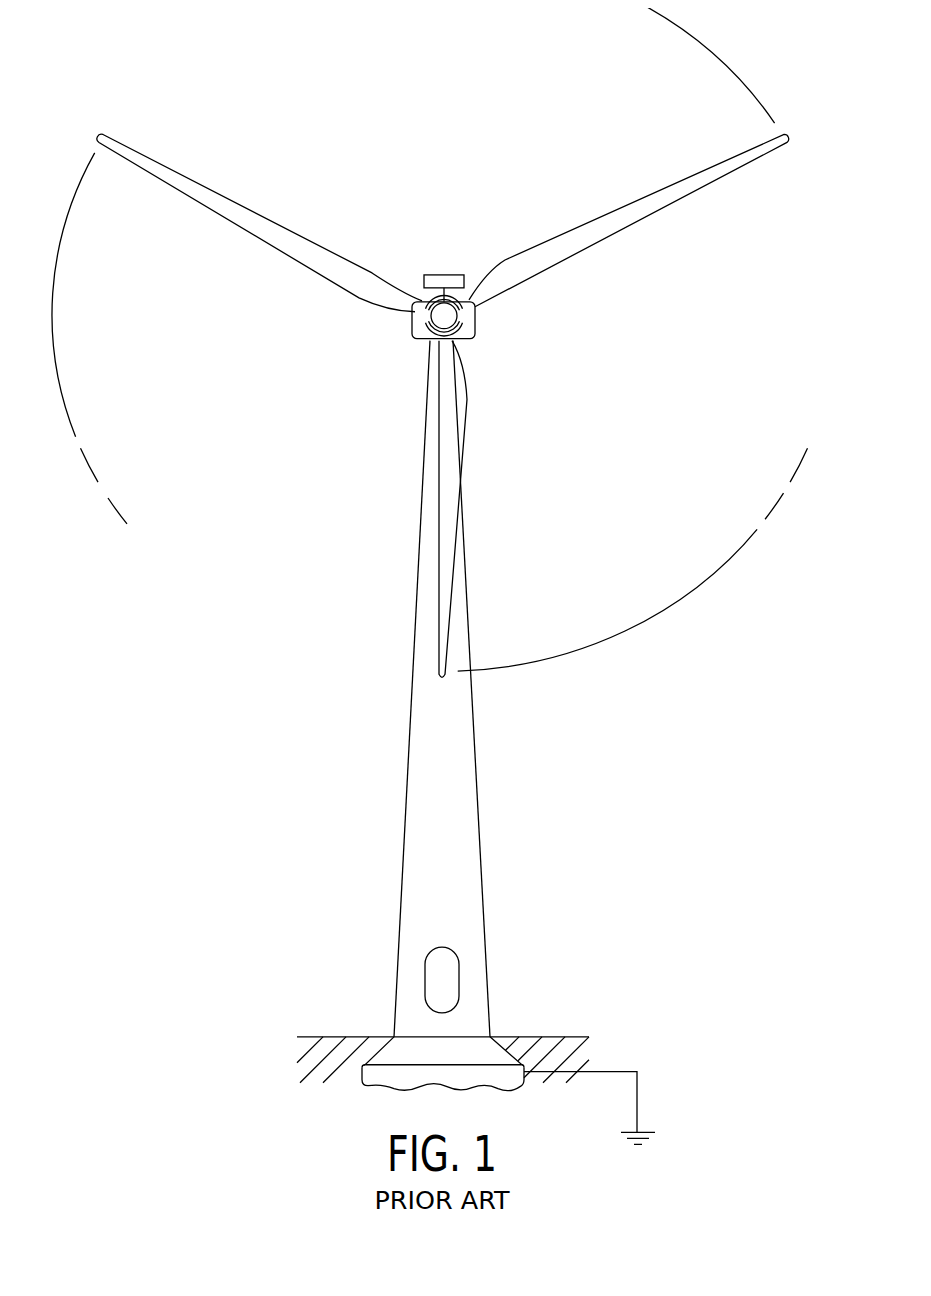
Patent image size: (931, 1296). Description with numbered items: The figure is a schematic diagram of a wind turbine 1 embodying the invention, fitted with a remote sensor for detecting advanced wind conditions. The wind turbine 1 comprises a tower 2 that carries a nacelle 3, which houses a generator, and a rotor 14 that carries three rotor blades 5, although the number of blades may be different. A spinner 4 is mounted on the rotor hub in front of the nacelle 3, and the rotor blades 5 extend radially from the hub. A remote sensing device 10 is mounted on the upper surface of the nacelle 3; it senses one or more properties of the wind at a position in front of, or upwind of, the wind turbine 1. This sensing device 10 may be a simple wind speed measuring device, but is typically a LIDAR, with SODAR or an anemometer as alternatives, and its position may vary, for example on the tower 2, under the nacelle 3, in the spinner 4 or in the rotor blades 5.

The wind turbine 1 is at (443, 639).
The tower 2 is at (403, 821).
The nacelle 3 is at (474, 316).
The spinner 4 is at (433, 316).
The rotor blade 5 is at (320, 246).
The remote sensing device 10 is at (440, 272).
The rotor 14 is at (351, 333).